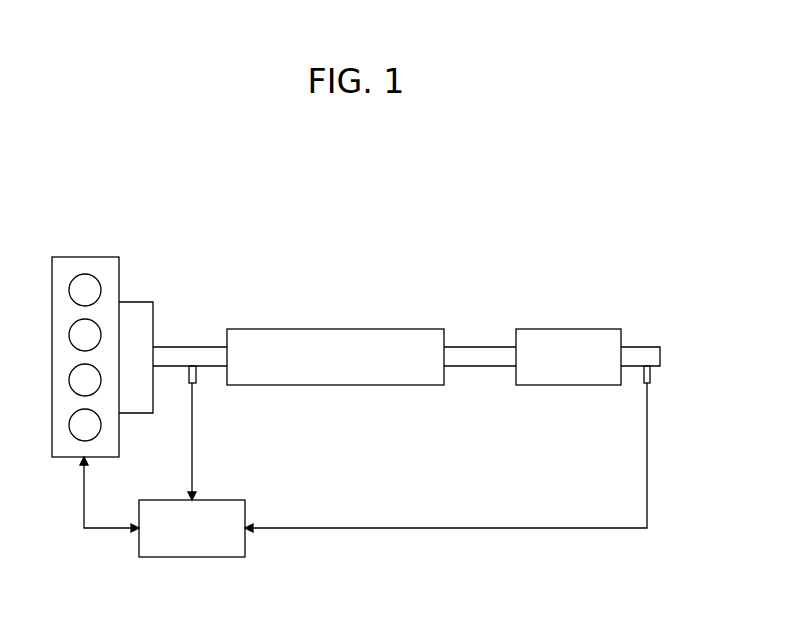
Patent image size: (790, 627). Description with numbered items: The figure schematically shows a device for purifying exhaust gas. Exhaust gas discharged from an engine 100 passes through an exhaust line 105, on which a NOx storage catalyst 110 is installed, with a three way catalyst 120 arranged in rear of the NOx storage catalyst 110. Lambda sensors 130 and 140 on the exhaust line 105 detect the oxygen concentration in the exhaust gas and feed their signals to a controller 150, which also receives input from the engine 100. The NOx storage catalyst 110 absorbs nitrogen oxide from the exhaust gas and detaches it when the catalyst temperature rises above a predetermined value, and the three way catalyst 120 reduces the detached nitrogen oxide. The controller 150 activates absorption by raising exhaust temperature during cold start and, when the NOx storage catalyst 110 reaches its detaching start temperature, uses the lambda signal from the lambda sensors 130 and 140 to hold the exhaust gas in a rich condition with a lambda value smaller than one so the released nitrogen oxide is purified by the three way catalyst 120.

The engine 100 is at (64, 257).
The exhaust line 105 is at (191, 353).
The NOx storage catalyst 110 is at (371, 329).
The three way catalyst 120 is at (543, 329).
The lambda sensor 130 is at (197, 385).
The lambda sensor 140 is at (650, 385).
The controller 150 is at (217, 558).